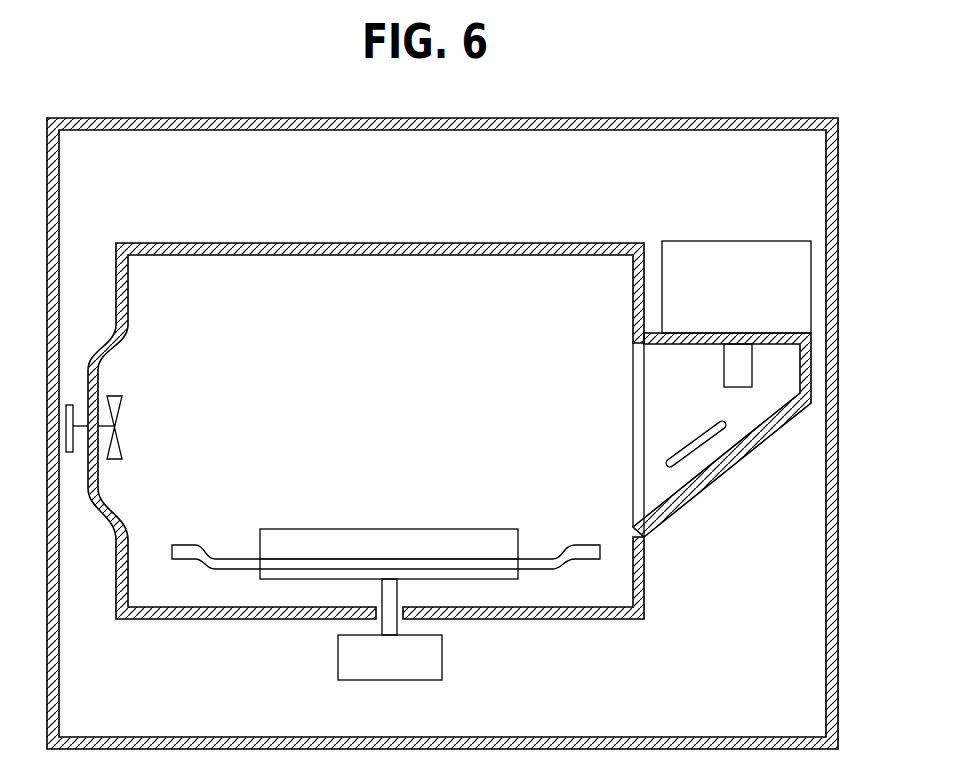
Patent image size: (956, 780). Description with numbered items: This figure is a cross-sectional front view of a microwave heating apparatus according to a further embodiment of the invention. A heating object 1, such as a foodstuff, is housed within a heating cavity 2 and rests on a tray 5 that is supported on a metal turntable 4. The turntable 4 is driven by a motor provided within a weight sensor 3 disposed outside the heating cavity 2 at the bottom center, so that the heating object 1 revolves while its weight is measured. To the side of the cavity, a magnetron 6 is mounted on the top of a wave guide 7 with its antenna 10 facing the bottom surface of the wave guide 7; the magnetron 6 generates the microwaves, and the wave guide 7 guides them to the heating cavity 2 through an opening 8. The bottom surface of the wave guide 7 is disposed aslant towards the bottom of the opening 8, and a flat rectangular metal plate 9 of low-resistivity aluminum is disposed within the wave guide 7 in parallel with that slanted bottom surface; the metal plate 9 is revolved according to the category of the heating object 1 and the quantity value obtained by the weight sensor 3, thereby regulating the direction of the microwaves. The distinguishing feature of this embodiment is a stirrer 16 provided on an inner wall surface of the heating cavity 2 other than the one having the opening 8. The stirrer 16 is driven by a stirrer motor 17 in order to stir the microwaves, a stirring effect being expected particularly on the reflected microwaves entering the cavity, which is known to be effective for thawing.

The heating object 1 is at (425, 530).
The heating cavity 2 is at (357, 270).
The weight sensor 3 is at (442, 655).
The metal turntable 4 is at (518, 575).
The tray 5 is at (556, 557).
The magnetron 6 is at (811, 277).
The wave guide 7 is at (780, 430).
The opening 8 is at (632, 413).
The metal plate 9 is at (687, 457).
The antenna 10 is at (752, 372).
The stirrer 16 is at (115, 397).
The stirrer motor 17 is at (67, 405).